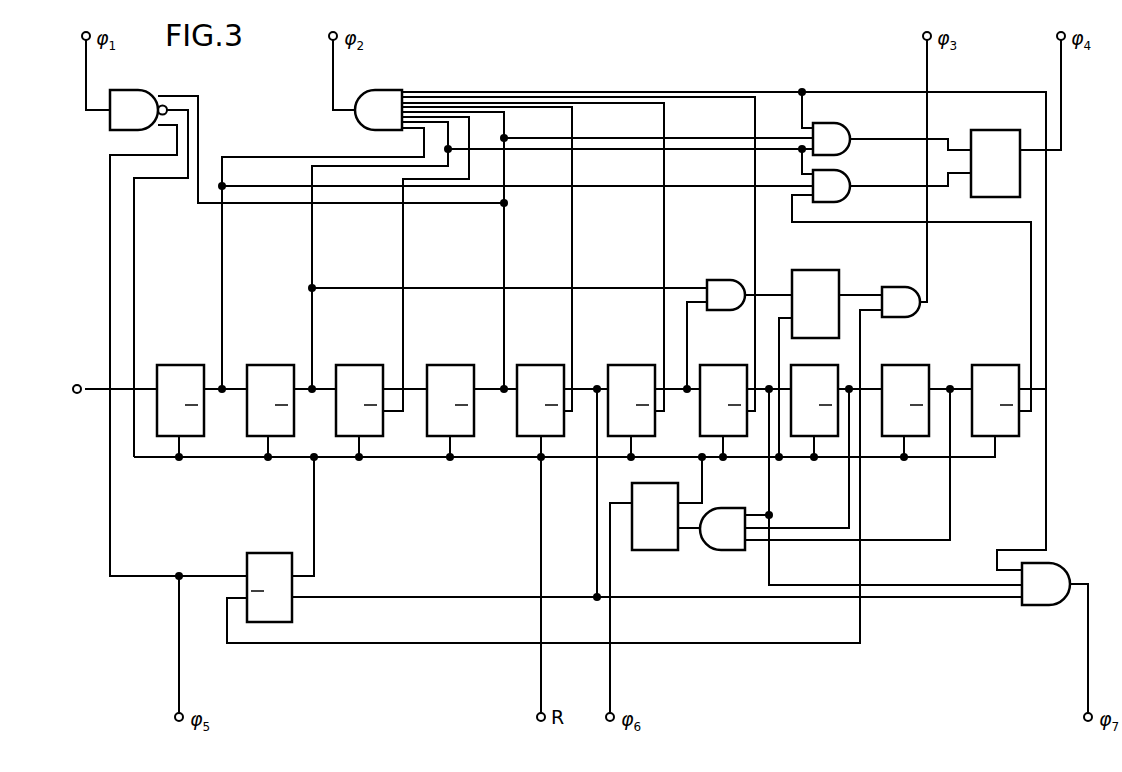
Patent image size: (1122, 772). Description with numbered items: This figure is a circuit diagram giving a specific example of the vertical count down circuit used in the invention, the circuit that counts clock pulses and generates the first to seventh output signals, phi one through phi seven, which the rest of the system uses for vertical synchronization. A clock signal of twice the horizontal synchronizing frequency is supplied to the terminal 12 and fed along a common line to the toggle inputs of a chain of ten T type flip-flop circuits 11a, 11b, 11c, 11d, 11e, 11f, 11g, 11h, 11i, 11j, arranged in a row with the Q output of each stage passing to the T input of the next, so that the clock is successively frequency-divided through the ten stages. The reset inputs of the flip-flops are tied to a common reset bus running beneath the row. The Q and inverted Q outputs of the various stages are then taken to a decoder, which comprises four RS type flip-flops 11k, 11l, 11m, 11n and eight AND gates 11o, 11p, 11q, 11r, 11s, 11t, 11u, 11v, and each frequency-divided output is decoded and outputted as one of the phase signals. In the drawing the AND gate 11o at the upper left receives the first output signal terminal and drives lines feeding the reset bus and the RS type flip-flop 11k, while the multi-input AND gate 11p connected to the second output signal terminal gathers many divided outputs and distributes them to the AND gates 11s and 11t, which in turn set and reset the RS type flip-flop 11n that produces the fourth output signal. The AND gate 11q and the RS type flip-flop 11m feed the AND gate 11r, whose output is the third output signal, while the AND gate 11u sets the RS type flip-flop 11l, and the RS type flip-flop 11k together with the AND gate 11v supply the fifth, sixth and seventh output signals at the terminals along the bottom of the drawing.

The terminal 12 is at (77, 383).
The T type flip-flop circuit 11a is at (180, 365).
The T type flip-flop circuit 11b is at (265, 365).
The T type flip-flop circuit 11c is at (350, 365).
The T type flip-flop circuit 11d is at (440, 365).
The T type flip-flop circuit 11e is at (533, 365).
The T type flip-flop circuit 11f is at (622, 365).
The T type flip-flop circuit 11g is at (720, 365).
The T type flip-flop circuit 11h is at (808, 366).
The T type flip-flop circuit 11i is at (898, 365).
The T type flip-flop circuit 11j is at (988, 365).
The RS type flip-flop 11k is at (278, 553).
The RS type flip-flop 11l is at (668, 550).
The RS type flip-flop 11m is at (820, 270).
The RS type flip-flop 11n is at (988, 130).
The AND gate 11o is at (134, 90).
The AND gate 11p is at (392, 90).
The AND gate 11q is at (723, 280).
The AND gate 11r is at (895, 287).
The AND gate 11s is at (842, 124).
The AND gate 11t is at (846, 172).
The AND gate 11u is at (725, 510).
The AND gate 11v is at (1056, 564).